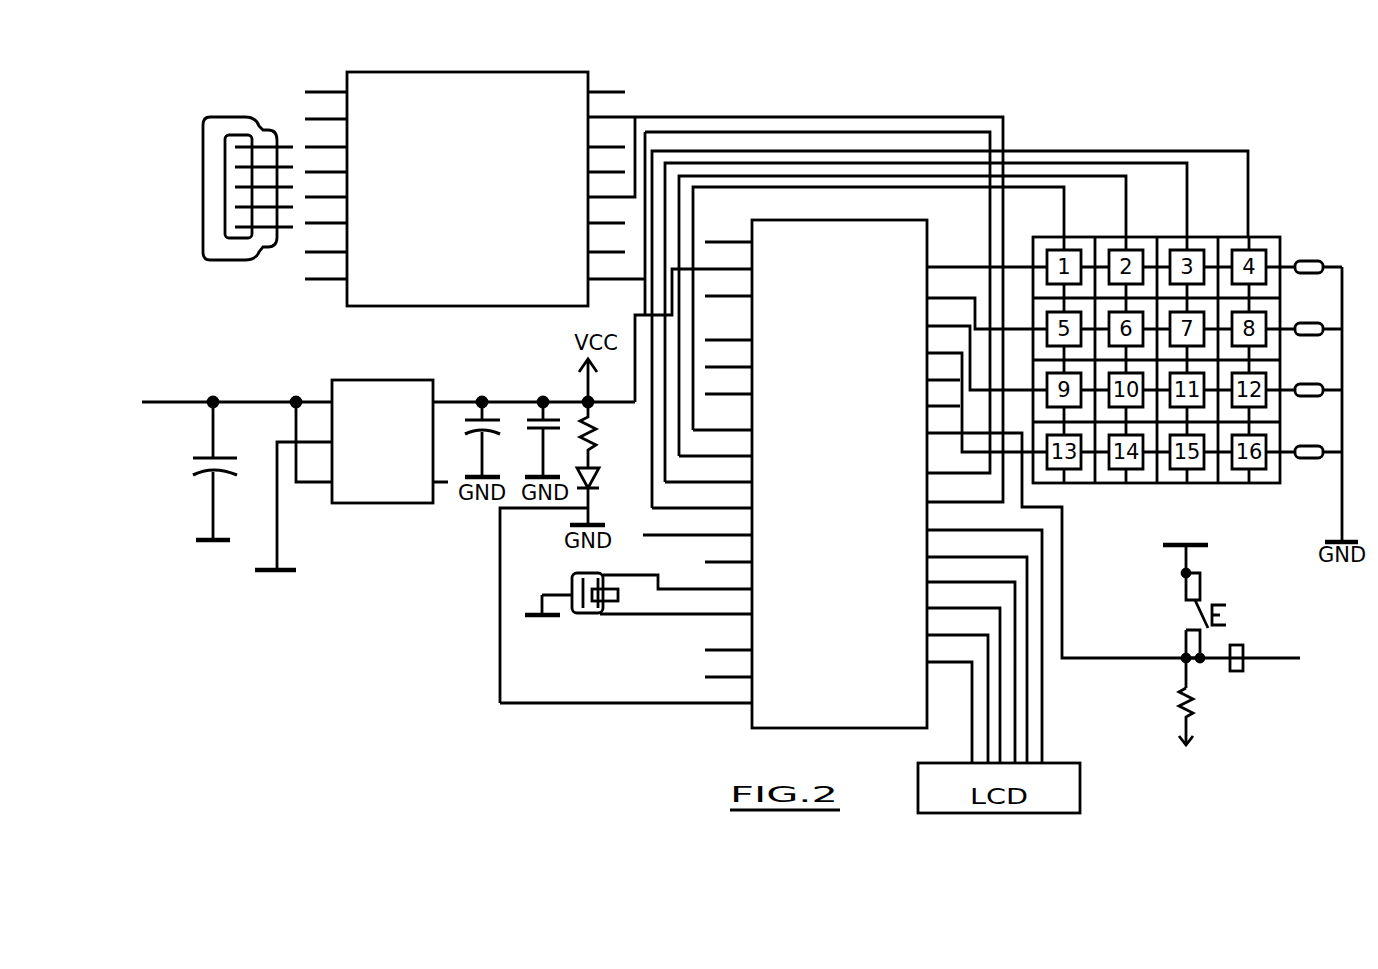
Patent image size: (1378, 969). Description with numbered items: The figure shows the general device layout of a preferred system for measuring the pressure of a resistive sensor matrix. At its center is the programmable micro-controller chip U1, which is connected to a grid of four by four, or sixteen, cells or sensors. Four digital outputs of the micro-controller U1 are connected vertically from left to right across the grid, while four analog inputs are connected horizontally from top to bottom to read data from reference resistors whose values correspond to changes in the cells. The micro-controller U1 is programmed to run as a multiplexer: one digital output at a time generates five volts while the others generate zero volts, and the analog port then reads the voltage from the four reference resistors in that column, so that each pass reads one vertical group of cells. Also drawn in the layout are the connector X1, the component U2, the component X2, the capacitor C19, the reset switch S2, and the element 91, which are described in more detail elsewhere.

The x1 component X1 is at (222, 187).
The FT230XS USB-to-serial interface X2 is at (465, 186).
The programmable micro-controller chip U1 is at (801, 475).
The U2 component U2 is at (388, 475).
The 10uF capacitor C19 is at (186, 484).
The reset switch S2 is at (1193, 647).
The crystal oscillator 91 is at (635, 607).